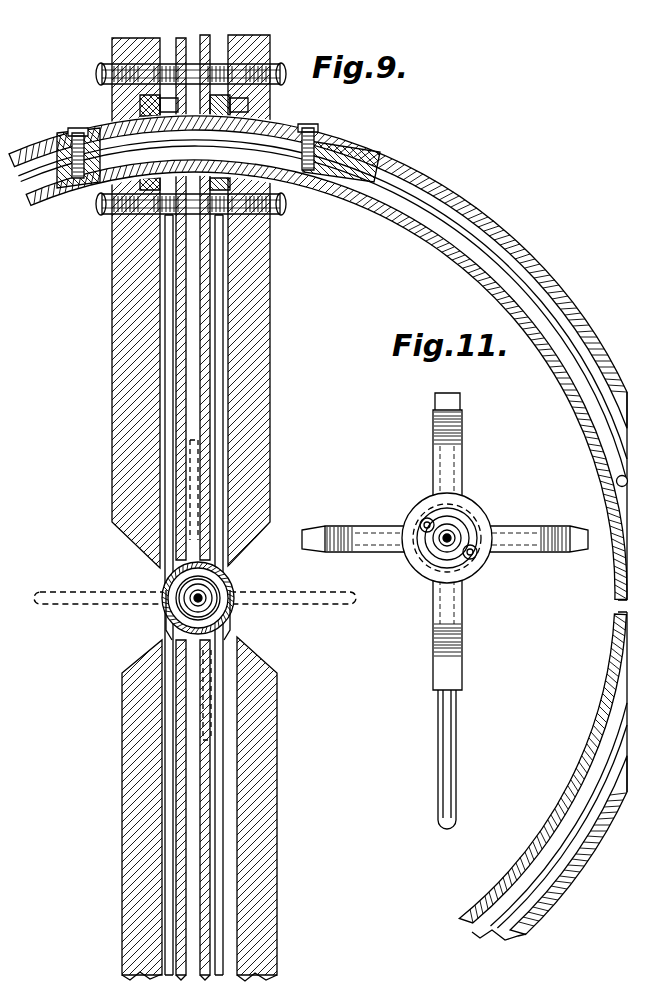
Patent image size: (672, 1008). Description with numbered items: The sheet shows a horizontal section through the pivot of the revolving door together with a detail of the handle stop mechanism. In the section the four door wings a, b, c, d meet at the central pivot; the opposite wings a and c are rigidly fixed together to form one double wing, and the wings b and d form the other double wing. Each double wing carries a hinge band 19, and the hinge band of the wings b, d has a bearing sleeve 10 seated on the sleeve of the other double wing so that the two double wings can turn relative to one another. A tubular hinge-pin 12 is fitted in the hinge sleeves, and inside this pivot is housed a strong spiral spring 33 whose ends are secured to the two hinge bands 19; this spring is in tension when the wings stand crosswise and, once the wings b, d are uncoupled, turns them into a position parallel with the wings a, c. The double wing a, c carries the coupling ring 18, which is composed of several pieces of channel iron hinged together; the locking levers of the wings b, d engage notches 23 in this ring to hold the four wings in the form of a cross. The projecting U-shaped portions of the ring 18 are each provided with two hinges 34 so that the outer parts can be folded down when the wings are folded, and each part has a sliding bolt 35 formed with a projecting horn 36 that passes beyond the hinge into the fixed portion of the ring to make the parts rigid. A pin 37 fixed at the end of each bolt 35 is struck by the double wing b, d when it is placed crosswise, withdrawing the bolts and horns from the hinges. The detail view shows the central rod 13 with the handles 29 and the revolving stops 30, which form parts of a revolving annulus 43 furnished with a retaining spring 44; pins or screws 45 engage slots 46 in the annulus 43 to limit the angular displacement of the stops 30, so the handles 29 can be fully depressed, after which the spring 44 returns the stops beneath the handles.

In FIG. 9, the bearing sleeve 10 is at (166, 573).
In FIG. 9, the tubular hinge-pin 12 is at (226, 590).
In FIG. 9, the rod 13 is at (192, 602).
In FIG. 11, the rod 13 is at (440, 556).
In FIG. 9, the ring 18 is at (120, 150).
In FIG. 9, the hinge band 19 is at (226, 382).
In FIG. 9, the notch 23 is at (622, 608).
In FIG. 9, the handle 29 is at (205, 442).
In FIG. 11, the handle 29 is at (440, 402).
In FIG. 11, the revolving stop 30 is at (356, 512).
In FIG. 9, the spiral spring 33 is at (166, 582).
In FIG. 9, the hinge 34 is at (336, 158).
In FIG. 9, the sliding bolt 35 is at (478, 246).
In FIG. 9, the projecting horn 36 is at (284, 142).
In FIG. 9, the pin 37 is at (616, 484).
In FIG. 11, the revolving annulus 43 is at (468, 580).
In FIG. 11, the retaining spring 44 is at (450, 554).
In FIG. 11, the pin or screw 45 is at (426, 517).
In FIG. 11, the slot 46 is at (426, 534).
In FIG. 9, the door wing a is at (132, 300).
In FIG. 9, the door wing b is at (262, 290).
In FIG. 9, the door wing c is at (258, 713).
In FIG. 9, the door wing d is at (138, 706).